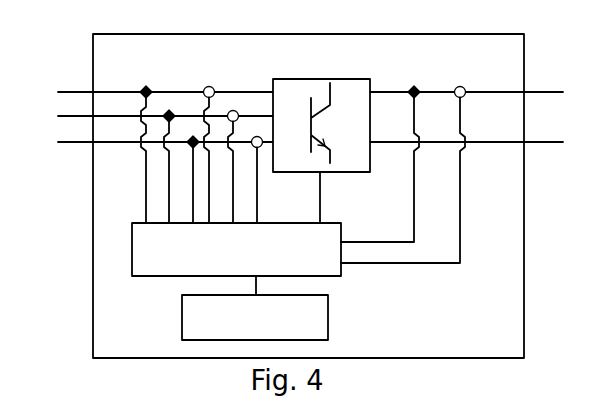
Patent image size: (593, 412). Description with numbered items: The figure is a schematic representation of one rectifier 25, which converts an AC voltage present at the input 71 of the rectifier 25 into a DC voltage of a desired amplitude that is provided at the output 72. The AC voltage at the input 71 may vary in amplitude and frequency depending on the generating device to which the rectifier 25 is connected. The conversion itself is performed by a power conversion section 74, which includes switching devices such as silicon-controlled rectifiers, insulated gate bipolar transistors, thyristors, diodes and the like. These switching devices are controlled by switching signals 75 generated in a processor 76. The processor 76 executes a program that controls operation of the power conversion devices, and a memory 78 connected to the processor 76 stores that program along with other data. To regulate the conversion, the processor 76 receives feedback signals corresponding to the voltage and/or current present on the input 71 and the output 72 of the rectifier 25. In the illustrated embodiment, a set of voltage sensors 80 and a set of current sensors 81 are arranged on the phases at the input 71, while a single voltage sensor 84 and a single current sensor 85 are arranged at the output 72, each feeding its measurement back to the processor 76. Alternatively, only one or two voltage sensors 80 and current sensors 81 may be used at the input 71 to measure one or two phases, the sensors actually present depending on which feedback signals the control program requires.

The rectifier 25 is at (92, 320).
The input 71 is at (86, 84).
The output 72 is at (532, 85).
The power conversion section 74 is at (313, 79).
The switching signals 75 is at (318, 191).
The processor 76 is at (131, 265).
The memory 78 is at (181, 336).
The voltage sensors 80 is at (193, 136).
The current sensors 81 is at (257, 136).
The voltage sensor 84 is at (414, 86).
The current sensor 85 is at (460, 86).